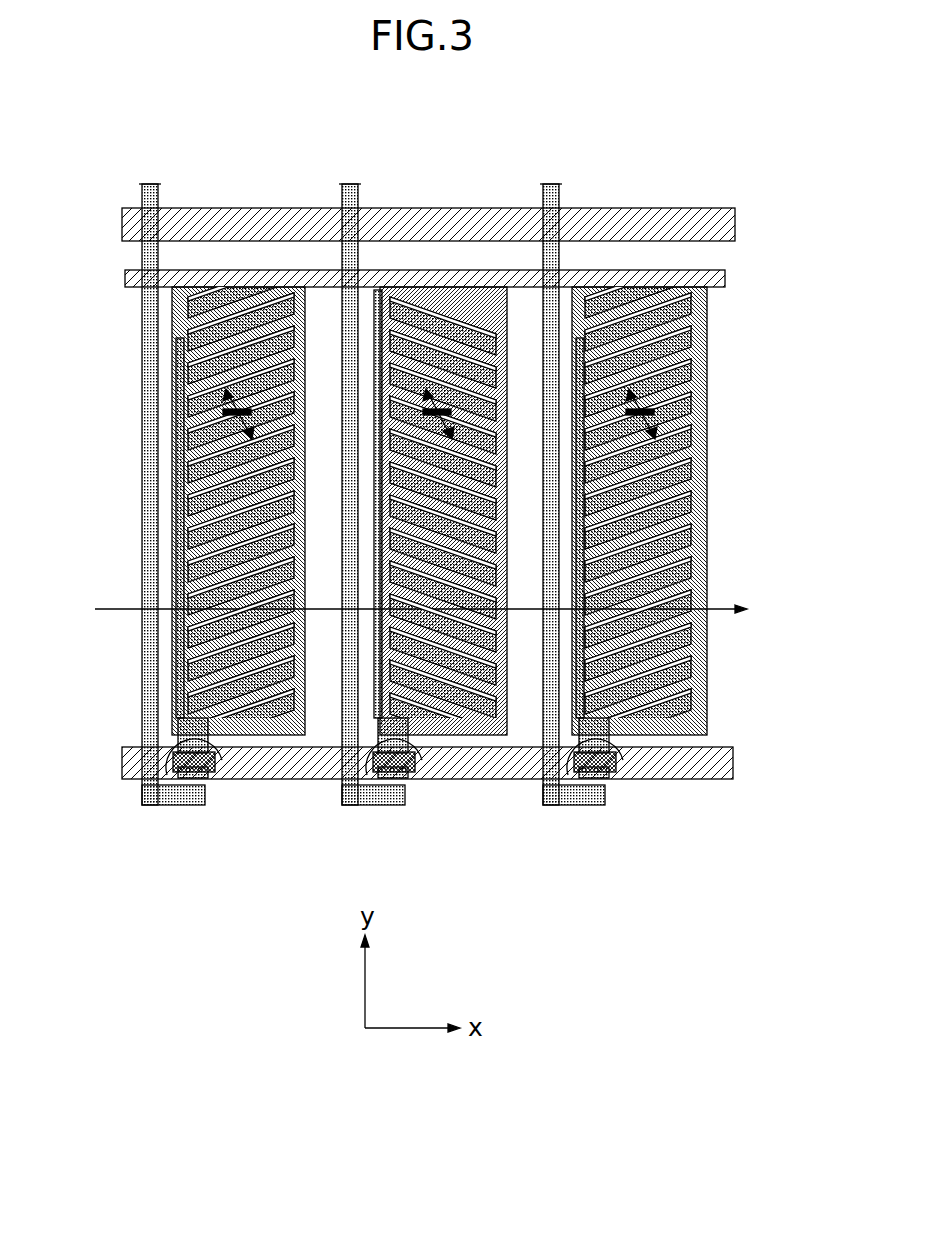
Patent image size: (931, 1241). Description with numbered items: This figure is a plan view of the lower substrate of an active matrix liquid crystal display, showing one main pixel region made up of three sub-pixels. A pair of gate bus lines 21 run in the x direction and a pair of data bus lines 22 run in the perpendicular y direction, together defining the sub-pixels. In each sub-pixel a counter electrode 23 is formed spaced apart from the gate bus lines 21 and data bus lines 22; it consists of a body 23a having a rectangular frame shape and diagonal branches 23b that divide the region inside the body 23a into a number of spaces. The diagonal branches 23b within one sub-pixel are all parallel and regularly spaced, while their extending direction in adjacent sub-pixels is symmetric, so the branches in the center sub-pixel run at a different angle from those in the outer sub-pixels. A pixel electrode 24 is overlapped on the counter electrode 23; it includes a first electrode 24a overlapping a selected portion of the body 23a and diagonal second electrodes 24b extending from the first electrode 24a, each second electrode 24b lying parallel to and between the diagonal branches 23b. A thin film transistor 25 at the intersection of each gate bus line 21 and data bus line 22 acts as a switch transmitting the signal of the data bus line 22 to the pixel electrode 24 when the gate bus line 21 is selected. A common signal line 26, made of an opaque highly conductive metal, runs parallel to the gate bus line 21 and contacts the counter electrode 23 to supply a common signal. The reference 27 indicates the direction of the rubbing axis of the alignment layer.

The gate bus line 21 is at (122, 227).
The data bus line 22 is at (150, 808).
The counter electrode 23 is at (800, 452).
The body 23a is at (700, 444).
The diagonal branch 23b is at (678, 497).
The pixel electrode 24 is at (73, 452).
The first electrode 24a is at (180, 465).
The second electrode 24b is at (200, 488).
The thin film transistor 25 is at (188, 782).
The common signal line 26 is at (125, 280).
The direction of rubbing axis 27 is at (441, 609).